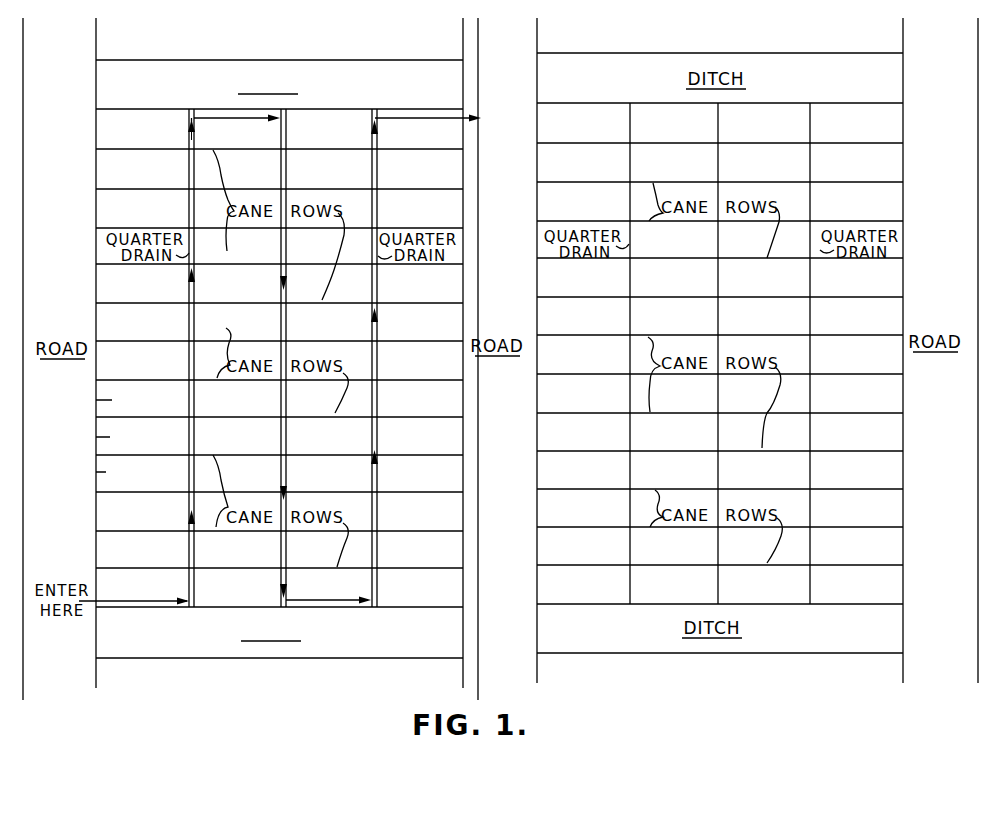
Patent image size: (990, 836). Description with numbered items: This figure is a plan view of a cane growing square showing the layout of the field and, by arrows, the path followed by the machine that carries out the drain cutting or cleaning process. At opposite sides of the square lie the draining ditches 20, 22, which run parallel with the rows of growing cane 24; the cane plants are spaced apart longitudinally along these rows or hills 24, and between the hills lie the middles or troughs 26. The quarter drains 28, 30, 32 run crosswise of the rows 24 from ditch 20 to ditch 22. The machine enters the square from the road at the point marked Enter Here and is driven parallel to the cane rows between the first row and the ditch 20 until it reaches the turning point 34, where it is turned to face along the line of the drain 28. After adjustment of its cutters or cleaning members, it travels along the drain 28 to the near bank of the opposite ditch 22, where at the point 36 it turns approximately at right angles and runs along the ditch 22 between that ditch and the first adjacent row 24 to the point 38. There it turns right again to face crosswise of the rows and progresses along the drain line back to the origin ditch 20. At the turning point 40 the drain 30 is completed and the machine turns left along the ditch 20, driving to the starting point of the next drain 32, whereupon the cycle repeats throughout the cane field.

The draining ditch 20 is at (196, 647).
The draining ditch 22 is at (177, 63).
The cane rows 24 is at (112, 149).
The middles 26 is at (105, 472).
The quarter drain 28 is at (188, 320).
The quarter drain 30 is at (288, 326).
The quarter drain 32 is at (378, 329).
The turning point 34 is at (196, 600).
The turning point 36 is at (189, 126).
The turning point 38 is at (286, 120).
The turning point 40 is at (290, 600).